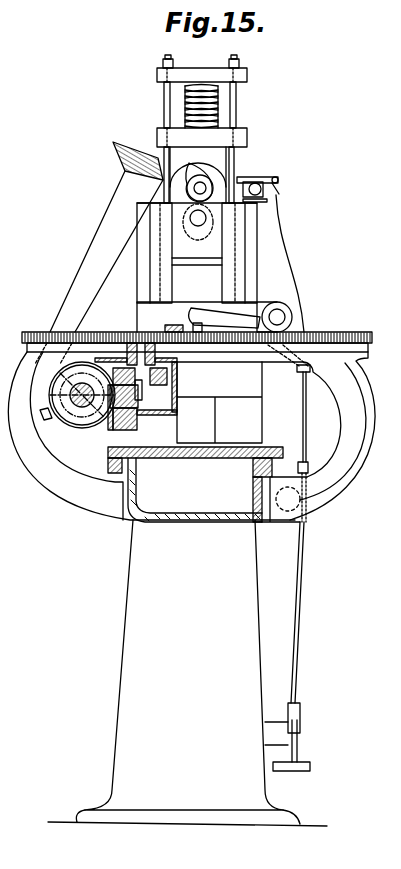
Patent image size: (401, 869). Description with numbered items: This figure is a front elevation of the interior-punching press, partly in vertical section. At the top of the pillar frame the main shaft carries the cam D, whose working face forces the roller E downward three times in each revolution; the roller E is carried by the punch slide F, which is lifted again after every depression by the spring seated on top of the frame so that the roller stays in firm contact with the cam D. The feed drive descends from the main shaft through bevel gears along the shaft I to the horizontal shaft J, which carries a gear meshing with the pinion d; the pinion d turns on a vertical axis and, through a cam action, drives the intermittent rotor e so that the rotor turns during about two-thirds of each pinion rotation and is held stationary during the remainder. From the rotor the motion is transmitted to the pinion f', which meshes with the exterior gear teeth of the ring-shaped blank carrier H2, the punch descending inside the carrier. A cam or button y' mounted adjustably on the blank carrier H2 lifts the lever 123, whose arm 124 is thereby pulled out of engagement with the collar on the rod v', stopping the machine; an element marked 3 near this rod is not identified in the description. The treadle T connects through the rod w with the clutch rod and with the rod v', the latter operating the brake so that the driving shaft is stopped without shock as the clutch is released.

The cam D is at (210, 172).
The roller E is at (198, 231).
The punch slide F is at (197, 253).
The shaft I is at (101, 244).
The blank carrier H2 is at (356, 337).
The pinion f' is at (127, 328).
The cam or button y' is at (171, 319).
The lever 123 is at (237, 318).
The arm 124 is at (288, 373).
The slide 3 is at (310, 429).
The rod v' is at (312, 447).
The intermittent rotor e is at (172, 376).
The pinion d is at (138, 398).
The shaft J is at (80, 410).
The rod w is at (306, 610).
The treadle T is at (300, 757).